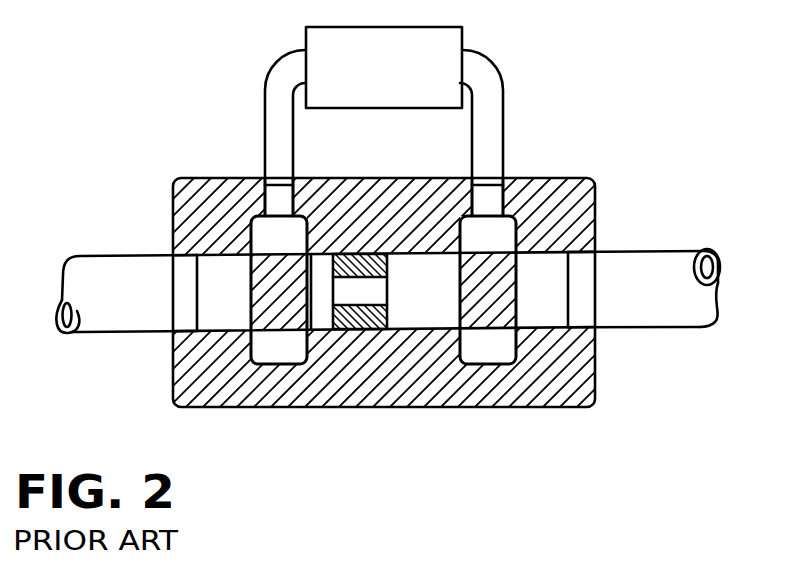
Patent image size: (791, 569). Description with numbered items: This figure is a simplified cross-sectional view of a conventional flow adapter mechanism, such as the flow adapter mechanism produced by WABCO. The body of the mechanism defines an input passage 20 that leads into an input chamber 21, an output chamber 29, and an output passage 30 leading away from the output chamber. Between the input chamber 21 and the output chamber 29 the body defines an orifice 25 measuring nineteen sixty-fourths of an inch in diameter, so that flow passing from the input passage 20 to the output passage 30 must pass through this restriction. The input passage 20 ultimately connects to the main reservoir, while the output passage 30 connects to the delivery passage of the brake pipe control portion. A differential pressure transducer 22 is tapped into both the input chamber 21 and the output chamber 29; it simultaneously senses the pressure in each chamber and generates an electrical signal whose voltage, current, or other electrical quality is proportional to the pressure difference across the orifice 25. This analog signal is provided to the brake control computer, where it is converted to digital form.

The input passage 20 is at (205, 285).
The input chamber 21 is at (270, 245).
The differential pressure transducer 22 is at (463, 47).
The orifice 25 is at (352, 293).
The output chamber 29 is at (500, 245).
The output passage 30 is at (558, 288).